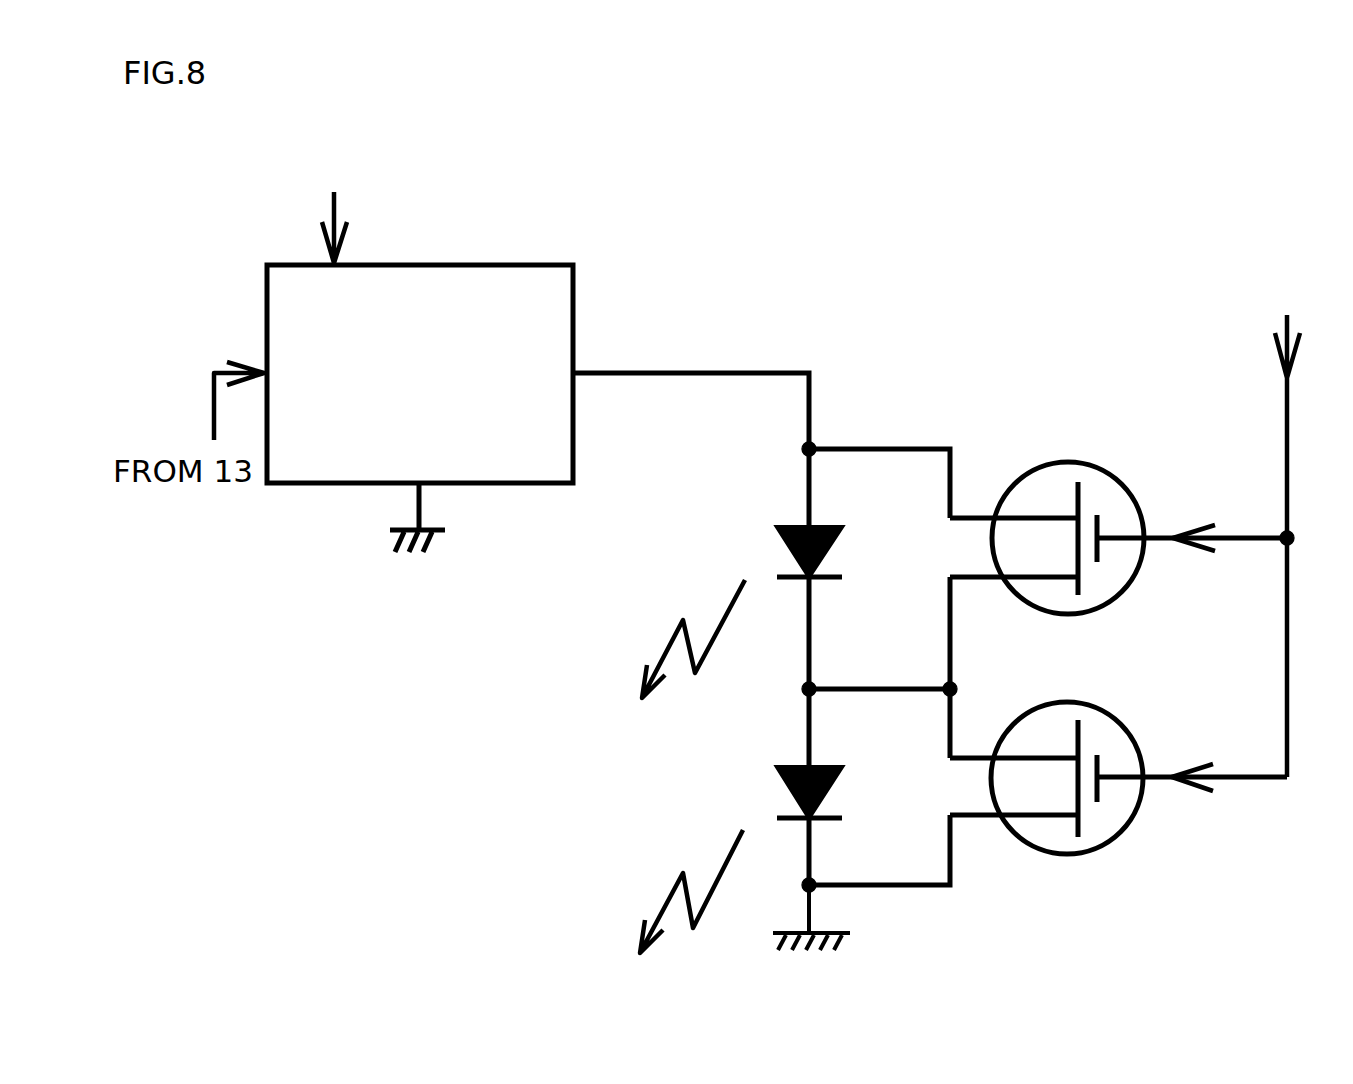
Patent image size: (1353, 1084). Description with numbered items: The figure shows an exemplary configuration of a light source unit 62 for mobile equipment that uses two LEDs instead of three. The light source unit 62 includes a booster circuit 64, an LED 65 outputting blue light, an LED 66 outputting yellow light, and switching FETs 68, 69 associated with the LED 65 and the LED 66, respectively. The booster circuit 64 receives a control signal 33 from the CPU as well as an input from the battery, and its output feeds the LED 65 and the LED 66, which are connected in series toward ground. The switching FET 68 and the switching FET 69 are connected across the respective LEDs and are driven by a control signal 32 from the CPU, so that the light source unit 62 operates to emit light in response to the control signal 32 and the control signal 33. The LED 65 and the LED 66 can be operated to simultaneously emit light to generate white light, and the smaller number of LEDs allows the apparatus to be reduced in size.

The control signal 32 is at (1287, 405).
The control signal 33 is at (333, 204).
The light source unit 62 is at (932, 208).
The booster circuit 64 is at (520, 264).
The LED 65 is at (815, 534).
The LED 66 is at (818, 772).
The switching FET 68 is at (1113, 480).
The switching FET 69 is at (1113, 719).